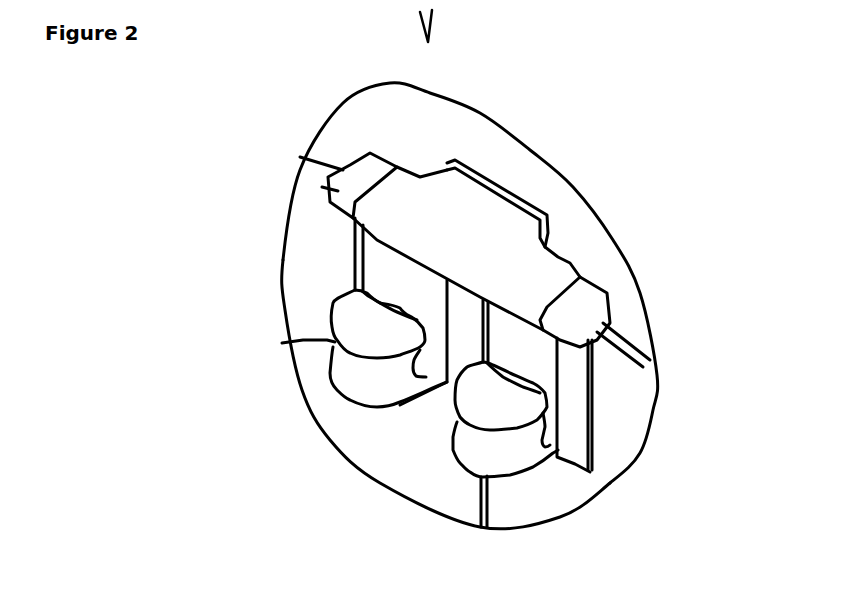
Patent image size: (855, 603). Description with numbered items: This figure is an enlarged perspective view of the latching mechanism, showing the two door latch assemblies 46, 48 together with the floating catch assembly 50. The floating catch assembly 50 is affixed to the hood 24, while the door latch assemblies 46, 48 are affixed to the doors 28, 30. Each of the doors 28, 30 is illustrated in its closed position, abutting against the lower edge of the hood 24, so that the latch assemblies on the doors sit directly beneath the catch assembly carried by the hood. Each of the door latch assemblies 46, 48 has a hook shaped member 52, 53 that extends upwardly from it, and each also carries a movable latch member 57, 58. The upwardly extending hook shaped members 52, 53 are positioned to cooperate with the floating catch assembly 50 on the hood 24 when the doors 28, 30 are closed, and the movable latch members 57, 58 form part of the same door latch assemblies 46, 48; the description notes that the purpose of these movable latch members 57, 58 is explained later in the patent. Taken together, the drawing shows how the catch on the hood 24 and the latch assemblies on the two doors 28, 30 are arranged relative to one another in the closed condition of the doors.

The hood 24 is at (420, 177).
The door 28 is at (388, 447).
The door 30 is at (623, 393).
The door latch assembly 46 is at (383, 268).
The door latch assembly 48 is at (528, 352).
The floating catch assembly 50 is at (560, 258).
The hook shaped member 52 is at (360, 177).
The hook shaped member 53 is at (597, 310).
The movable latch member 57 is at (357, 333).
The movable latch member 58 is at (503, 413).